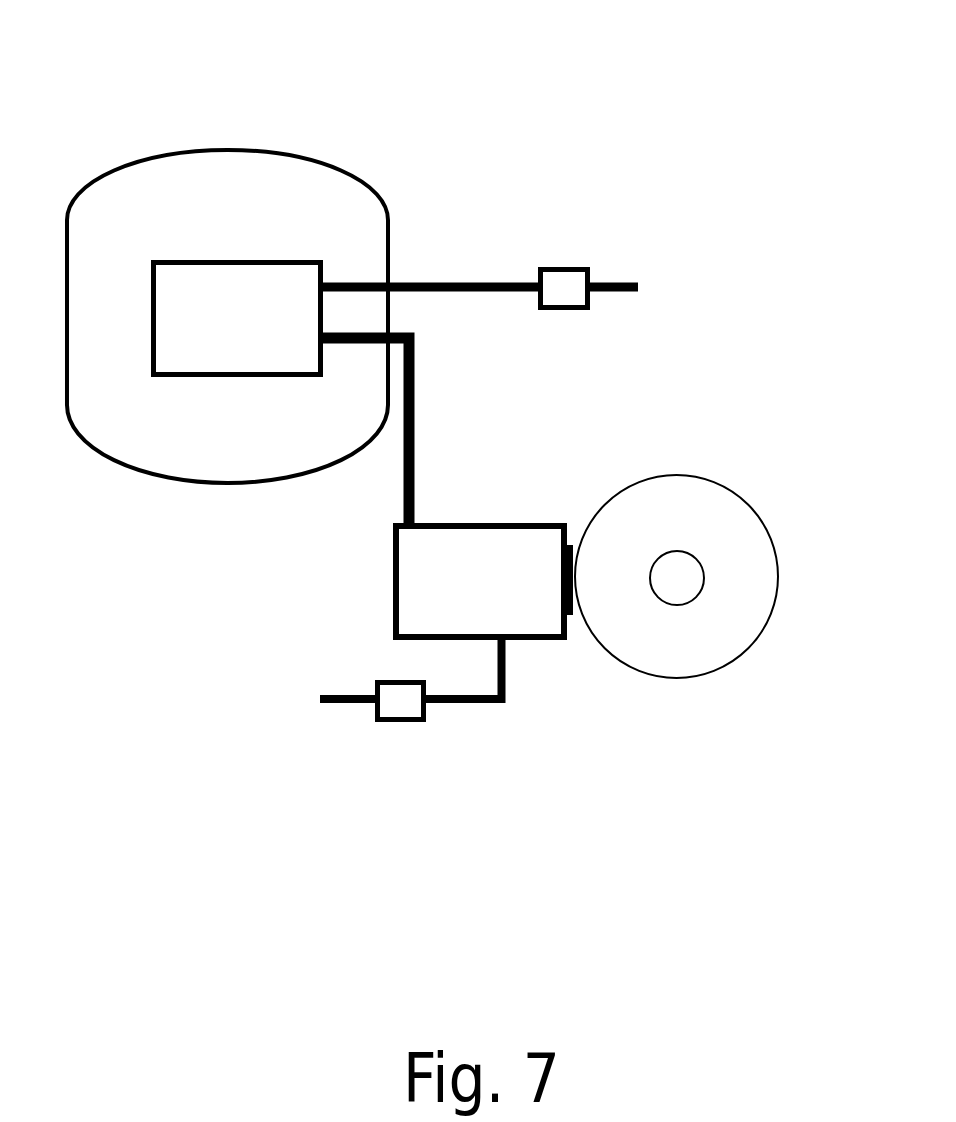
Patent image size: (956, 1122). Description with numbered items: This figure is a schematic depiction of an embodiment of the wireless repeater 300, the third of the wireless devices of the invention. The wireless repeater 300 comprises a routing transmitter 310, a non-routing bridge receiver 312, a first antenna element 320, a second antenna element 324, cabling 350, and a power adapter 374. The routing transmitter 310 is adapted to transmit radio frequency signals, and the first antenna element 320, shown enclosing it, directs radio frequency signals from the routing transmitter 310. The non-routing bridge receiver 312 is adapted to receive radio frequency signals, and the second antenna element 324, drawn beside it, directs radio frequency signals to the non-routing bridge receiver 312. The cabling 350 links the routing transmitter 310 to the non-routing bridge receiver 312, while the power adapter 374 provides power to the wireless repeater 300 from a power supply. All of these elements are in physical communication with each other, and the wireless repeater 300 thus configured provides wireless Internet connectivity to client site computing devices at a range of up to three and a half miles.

The wireless repeater 300 is at (673, 175).
The first antenna element 320 is at (230, 150).
The routing transmitter 310 is at (242, 358).
The cabling 350 is at (416, 462).
The power adapter 374 is at (563, 309).
The non-routing bridge receiver 312 is at (393, 587).
The second antenna element 324 is at (675, 680).